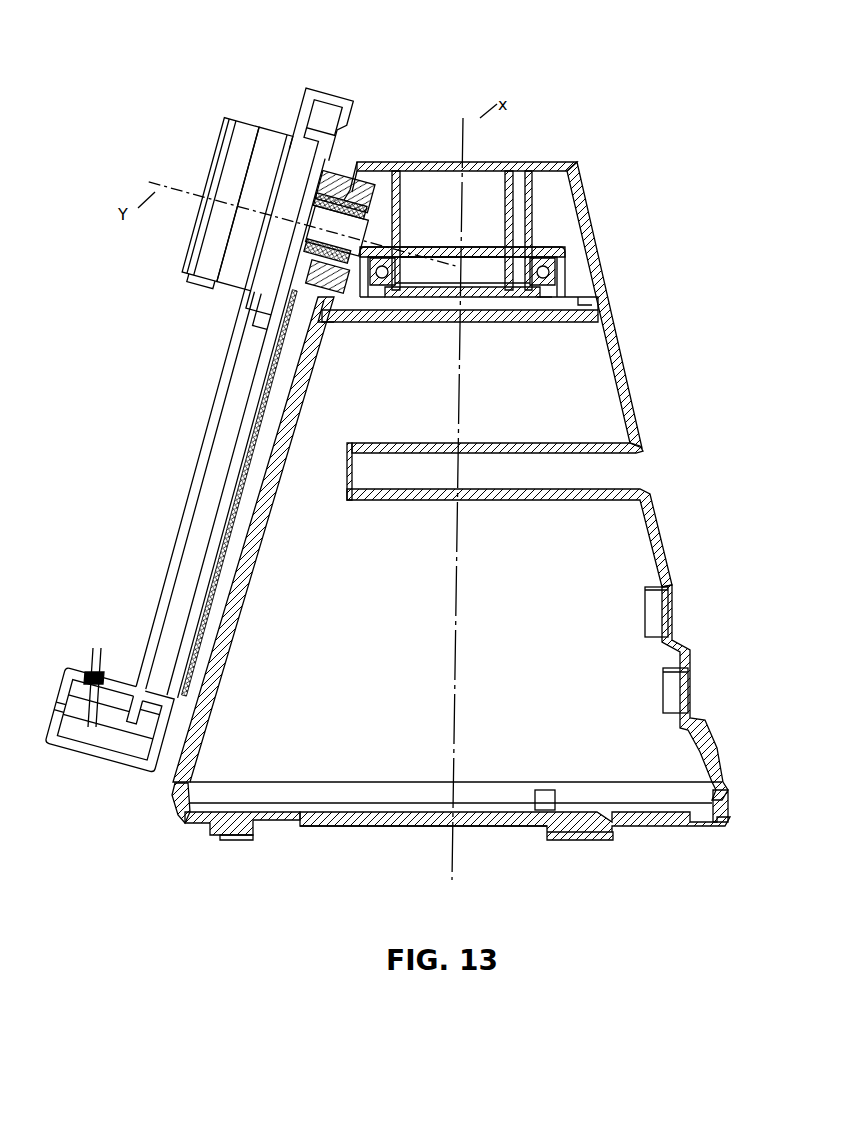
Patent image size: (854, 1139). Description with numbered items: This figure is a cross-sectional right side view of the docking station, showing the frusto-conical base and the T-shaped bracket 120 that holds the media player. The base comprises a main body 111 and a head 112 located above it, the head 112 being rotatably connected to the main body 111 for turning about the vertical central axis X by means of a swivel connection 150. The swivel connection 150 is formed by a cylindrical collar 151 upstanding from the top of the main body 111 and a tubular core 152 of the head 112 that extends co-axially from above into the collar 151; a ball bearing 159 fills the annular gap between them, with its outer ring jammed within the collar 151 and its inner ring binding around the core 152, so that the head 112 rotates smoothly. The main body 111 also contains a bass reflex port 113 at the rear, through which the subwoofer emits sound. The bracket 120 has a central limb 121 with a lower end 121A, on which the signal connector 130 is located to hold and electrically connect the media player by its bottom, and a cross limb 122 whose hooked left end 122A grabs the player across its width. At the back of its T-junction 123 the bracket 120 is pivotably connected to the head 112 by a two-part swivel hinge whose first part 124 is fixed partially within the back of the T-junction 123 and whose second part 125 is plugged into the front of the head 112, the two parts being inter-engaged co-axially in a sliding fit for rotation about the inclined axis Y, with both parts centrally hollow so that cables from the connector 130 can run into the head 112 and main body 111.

The main body 111 is at (625, 545).
The head 112 is at (583, 190).
The bass reflex port 113 is at (394, 502).
The bracket 120 is at (176, 494).
The central limb 121 is at (225, 415).
The lower end 121A is at (86, 738).
The cross limb 122 is at (272, 150).
The left end 122A is at (215, 165).
The T-junction 123 is at (330, 100).
The first part 124 is at (352, 182).
The second part 125 is at (343, 232).
The signal connector 130 is at (92, 652).
The swivel connection 150 is at (572, 272).
The cylindrical collar 151 is at (590, 296).
The tubular core 152 is at (538, 240).
The ball bearing 159 is at (545, 300).